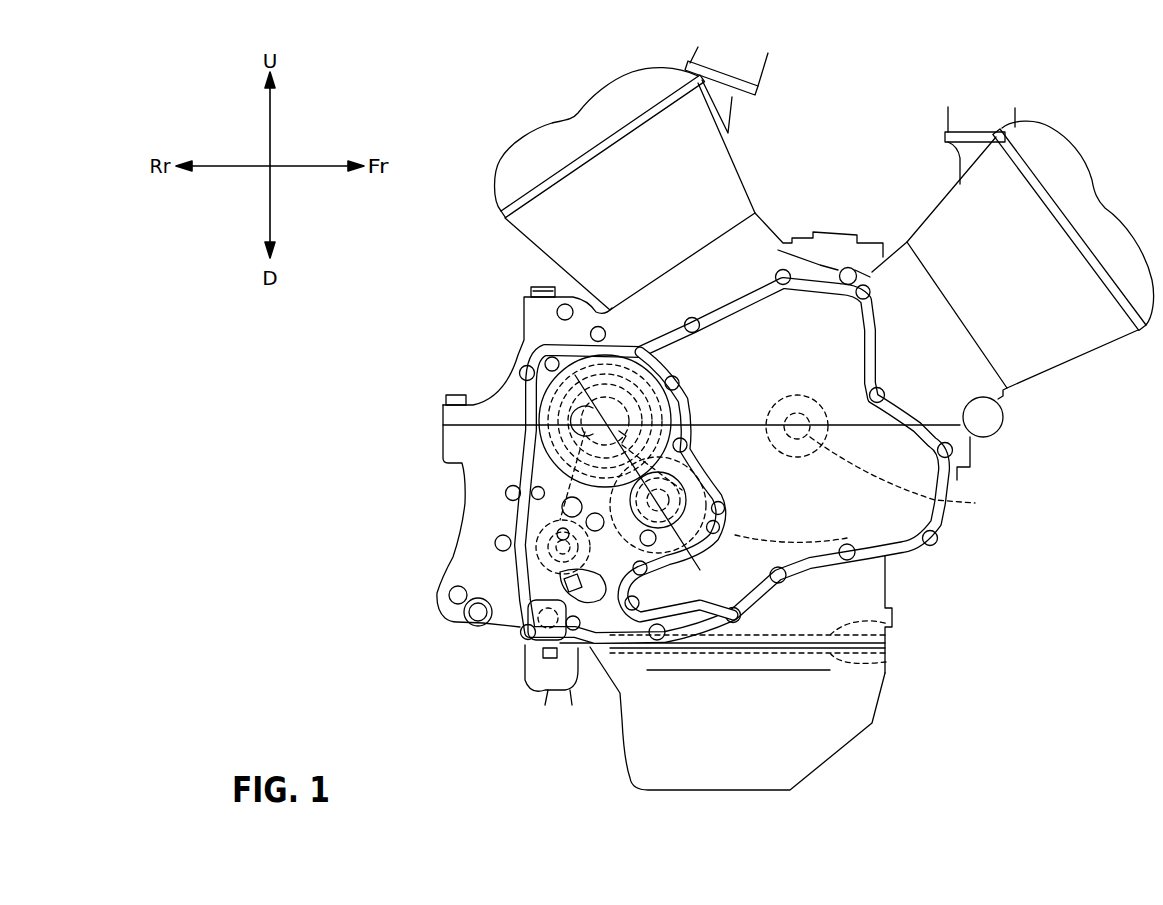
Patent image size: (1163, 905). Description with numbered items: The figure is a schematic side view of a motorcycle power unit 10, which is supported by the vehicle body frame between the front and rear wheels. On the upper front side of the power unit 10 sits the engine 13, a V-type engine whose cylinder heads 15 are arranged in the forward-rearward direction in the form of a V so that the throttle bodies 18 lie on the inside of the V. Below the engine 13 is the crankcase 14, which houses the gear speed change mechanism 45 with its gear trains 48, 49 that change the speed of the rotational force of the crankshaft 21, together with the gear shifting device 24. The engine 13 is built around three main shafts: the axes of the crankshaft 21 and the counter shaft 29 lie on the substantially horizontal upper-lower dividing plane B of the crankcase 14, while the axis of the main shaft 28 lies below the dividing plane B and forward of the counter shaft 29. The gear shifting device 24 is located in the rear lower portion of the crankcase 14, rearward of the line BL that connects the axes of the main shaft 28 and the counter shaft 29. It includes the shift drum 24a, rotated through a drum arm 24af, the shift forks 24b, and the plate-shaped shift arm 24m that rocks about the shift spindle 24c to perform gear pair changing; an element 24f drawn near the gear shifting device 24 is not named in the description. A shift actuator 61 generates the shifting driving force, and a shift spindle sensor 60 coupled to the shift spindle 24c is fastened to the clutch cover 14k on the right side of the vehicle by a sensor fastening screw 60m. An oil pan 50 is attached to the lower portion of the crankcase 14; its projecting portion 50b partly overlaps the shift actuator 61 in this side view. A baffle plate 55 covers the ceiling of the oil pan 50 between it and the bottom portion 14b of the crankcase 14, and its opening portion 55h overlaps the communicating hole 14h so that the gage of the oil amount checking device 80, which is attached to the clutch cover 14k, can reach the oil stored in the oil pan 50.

The power unit 10 is at (486, 111).
The engine 13 is at (882, 455).
The crankcase 14 is at (886, 573).
The bottom portion 14b is at (890, 624).
The communicating hole 14h is at (640, 637).
The clutch cover 14k is at (705, 672).
The cylinder heads 15 is at (760, 193).
The throttle bodies 18 is at (755, 64).
The crankshaft 21 is at (940, 489).
The gear shifting device 24 is at (520, 528).
The shift drum 24a is at (452, 582).
The drum arm 24af is at (518, 562).
The shift forks 24b is at (527, 470).
The shift spindle 24c is at (512, 630).
The flange 24f is at (522, 512).
The shift arm 24m is at (490, 630).
The main shaft 28 is at (690, 492).
The counter shaft 29 is at (634, 365).
The gear speed change mechanism 45 is at (670, 436).
The gear train 48 is at (697, 462).
The gear train 49 is at (627, 352).
The oil pan 50 is at (873, 719).
The projecting portion 50b is at (585, 657).
The baffle plate 55 is at (886, 662).
The opening portion 55h is at (607, 645).
The shift spindle sensor 60 is at (528, 690).
The sensor fastening screw 60m is at (590, 648).
The shift actuator 61 is at (568, 683).
The oil amount checking device 80 is at (608, 587).
The upper-lower dividing plane B is at (885, 412).
The line BL is at (730, 537).